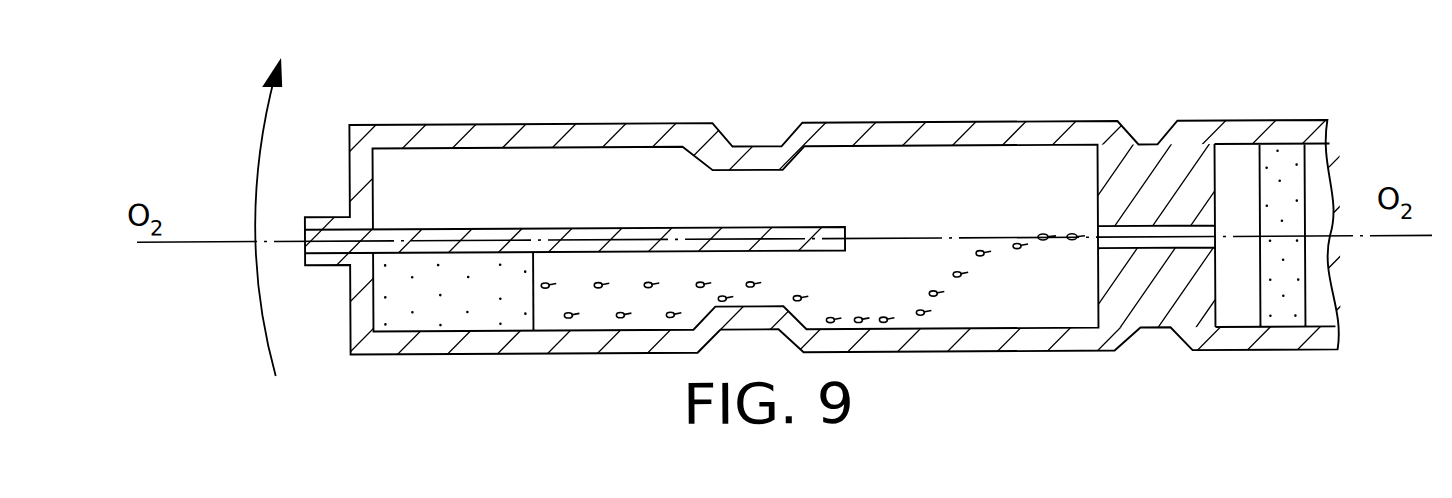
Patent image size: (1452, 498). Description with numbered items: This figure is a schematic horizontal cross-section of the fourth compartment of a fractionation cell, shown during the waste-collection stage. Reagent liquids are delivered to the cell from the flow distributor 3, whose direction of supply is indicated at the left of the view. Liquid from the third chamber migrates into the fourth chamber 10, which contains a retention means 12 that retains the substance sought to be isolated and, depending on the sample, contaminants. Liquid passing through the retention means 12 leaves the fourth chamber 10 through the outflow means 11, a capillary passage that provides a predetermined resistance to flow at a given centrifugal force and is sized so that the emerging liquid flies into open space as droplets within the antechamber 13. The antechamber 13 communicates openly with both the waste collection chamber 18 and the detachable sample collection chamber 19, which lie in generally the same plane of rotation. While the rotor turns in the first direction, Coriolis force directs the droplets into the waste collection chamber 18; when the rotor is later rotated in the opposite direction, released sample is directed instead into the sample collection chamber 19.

The flow distributor 3 is at (256, 217).
The fourth chamber 10 is at (1028, 192).
The outflow means 11 is at (1133, 232).
The retention means 12 is at (1267, 145).
The antechamber 13 is at (594, 243).
The waste collection chamber 18 is at (478, 290).
The sample collection chamber 19 is at (436, 188).